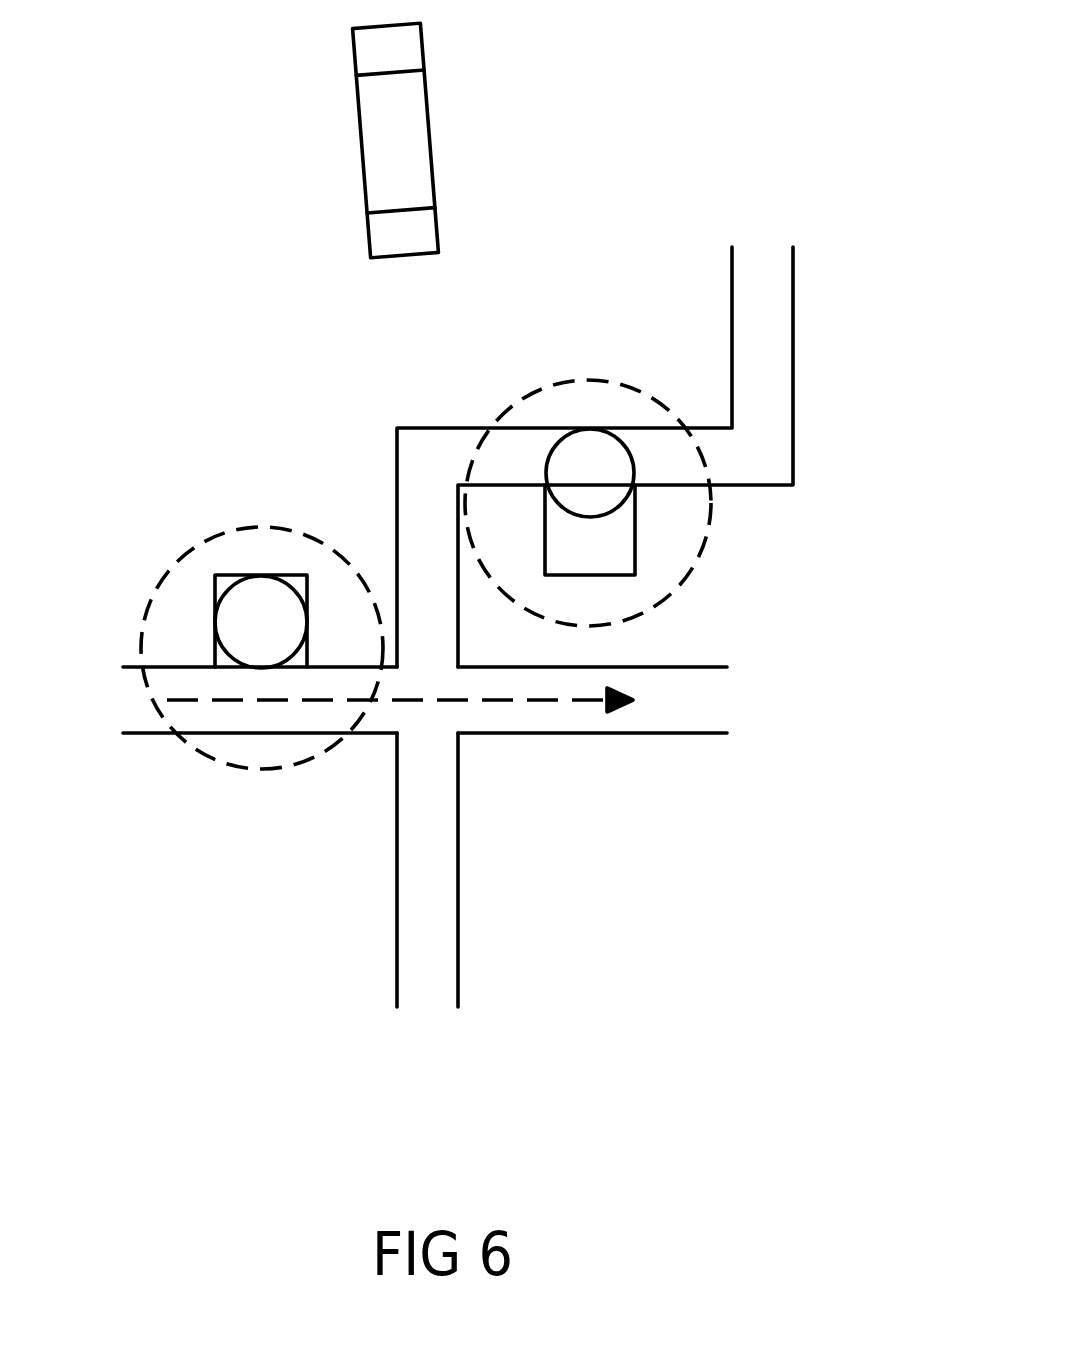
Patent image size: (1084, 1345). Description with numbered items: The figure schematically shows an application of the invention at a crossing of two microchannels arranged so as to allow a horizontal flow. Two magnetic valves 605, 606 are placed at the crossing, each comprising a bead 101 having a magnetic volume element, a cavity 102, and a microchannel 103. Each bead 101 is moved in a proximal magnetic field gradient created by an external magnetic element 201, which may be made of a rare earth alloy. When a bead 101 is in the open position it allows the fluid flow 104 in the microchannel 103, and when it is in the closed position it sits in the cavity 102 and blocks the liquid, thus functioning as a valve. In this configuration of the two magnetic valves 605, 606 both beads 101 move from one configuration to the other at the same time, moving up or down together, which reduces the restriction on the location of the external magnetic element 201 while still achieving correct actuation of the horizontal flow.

The bead 101 is at (553, 445).
The cavity 102 is at (600, 555).
The microchannel 103 is at (690, 700).
The fluid flow 104 is at (510, 702).
The external magnetic element 201 is at (362, 158).
The magnetic valve 605 is at (215, 763).
The magnetic valve 606 is at (588, 382).